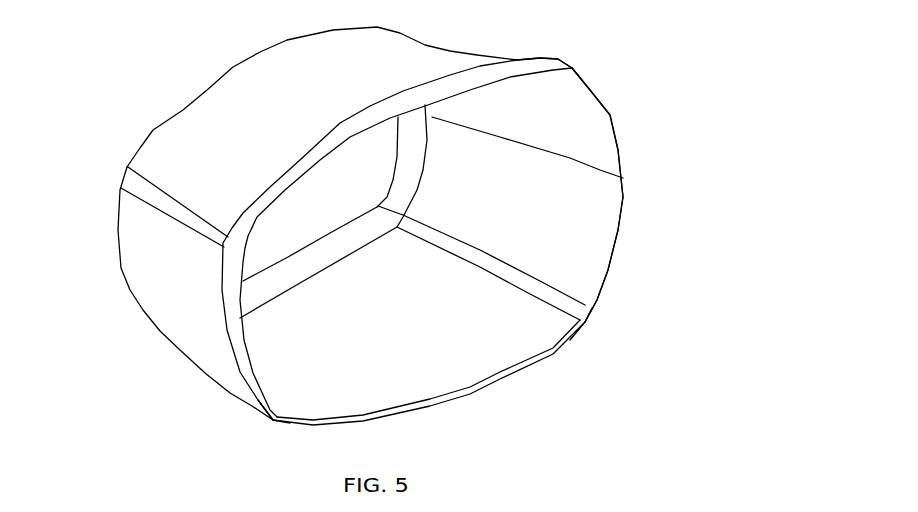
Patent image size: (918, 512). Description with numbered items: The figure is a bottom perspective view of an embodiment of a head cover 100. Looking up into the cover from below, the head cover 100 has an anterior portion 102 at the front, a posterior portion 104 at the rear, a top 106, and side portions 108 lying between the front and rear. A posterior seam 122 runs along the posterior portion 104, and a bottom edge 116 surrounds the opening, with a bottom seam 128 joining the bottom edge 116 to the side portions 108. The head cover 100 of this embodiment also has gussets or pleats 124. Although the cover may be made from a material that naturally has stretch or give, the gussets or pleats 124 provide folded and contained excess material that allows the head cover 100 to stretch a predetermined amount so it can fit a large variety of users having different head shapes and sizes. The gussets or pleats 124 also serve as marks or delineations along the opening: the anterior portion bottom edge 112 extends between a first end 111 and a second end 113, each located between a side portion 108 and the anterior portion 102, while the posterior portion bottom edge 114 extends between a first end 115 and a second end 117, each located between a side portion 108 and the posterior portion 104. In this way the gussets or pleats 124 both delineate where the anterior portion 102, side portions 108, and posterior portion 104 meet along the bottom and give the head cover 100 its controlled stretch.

The head cover 100 is at (182, 405).
The anterior portion 102 is at (165, 302).
The posterior portion 104 is at (528, 213).
The top 106 is at (315, 212).
The side portions 108 is at (349, 194).
The first end 111 is at (226, 240).
The anterior portion bottom edge 112 is at (240, 322).
The second end 113 is at (273, 422).
The posterior portion bottom edge 114 is at (623, 197).
The first end 115 is at (573, 68).
The bottom edge 116 is at (553, 352).
The second end 117 is at (590, 323).
The posterior seam 122 is at (570, 158).
The gussets or pleats 124 is at (130, 187).
The bottom seam 128 is at (498, 372).